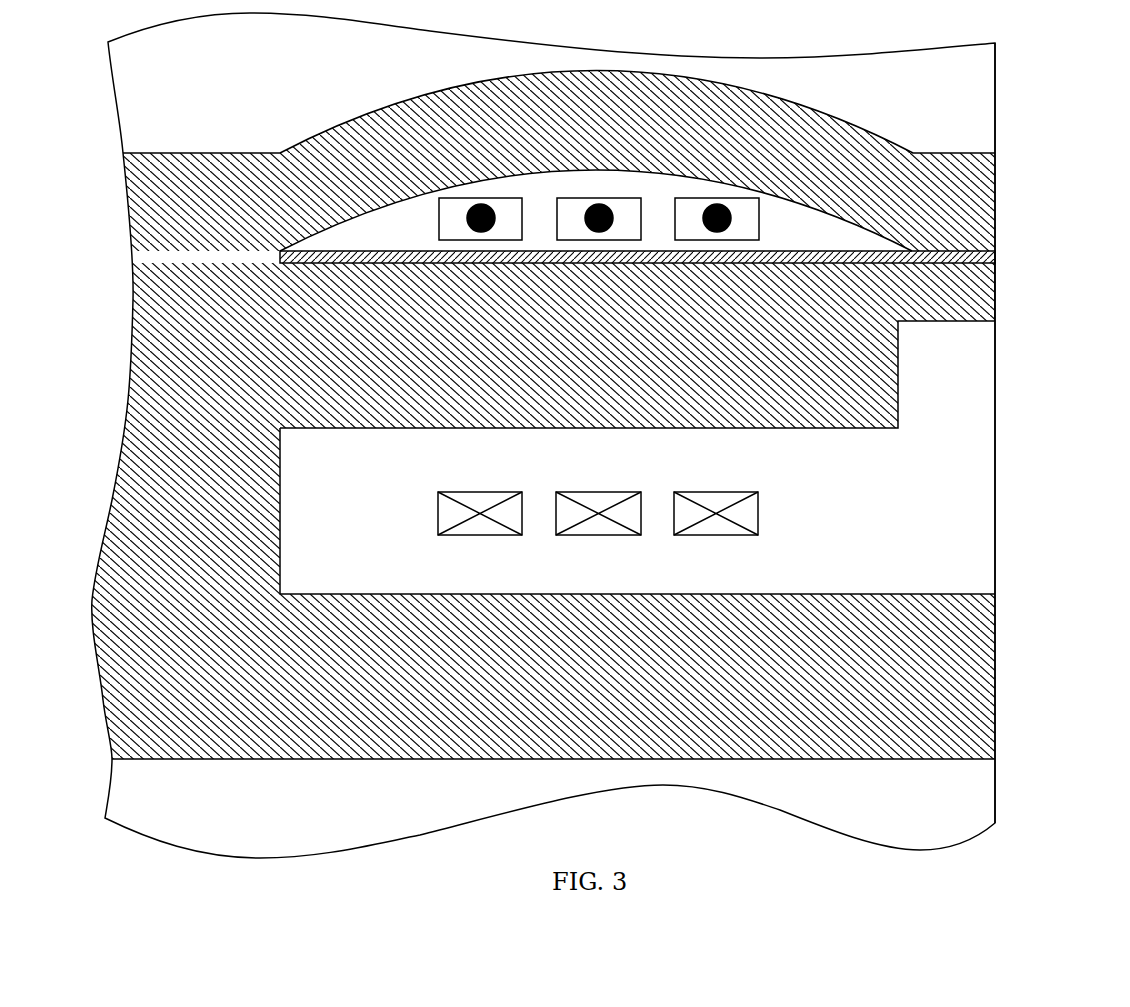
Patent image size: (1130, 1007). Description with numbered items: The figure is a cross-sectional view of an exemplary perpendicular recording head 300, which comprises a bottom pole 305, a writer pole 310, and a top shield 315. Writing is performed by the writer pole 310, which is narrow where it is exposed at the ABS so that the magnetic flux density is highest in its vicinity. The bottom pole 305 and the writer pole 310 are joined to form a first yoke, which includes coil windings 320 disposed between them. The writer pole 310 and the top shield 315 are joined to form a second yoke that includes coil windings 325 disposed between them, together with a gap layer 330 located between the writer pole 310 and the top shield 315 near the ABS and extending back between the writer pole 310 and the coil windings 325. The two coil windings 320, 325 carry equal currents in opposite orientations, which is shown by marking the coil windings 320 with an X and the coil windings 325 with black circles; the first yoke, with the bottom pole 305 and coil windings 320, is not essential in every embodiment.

The perpendicular recording head 300 is at (128, 407).
The bottom pole 305 is at (995, 690).
The writer pole 310 is at (995, 297).
The top shield 315 is at (995, 193).
The coil windings 320 is at (785, 515).
The coil windings 325 is at (777, 225).
The gap layer 330 is at (995, 258).
The air bearing surface ABS is at (995, 413).